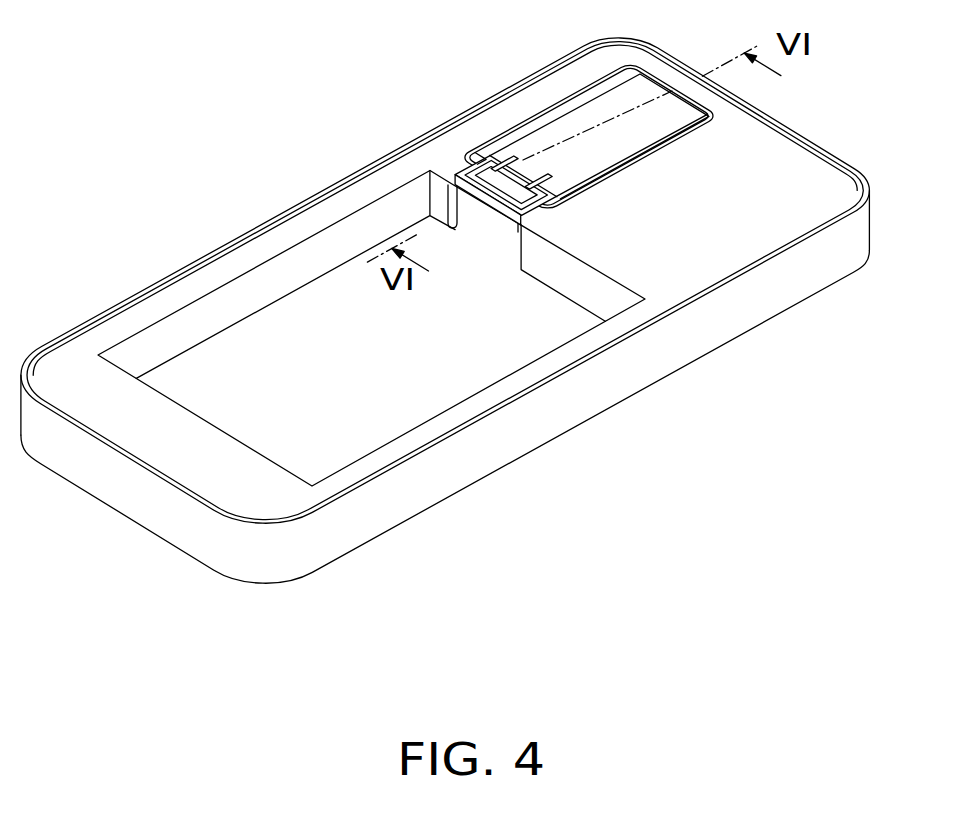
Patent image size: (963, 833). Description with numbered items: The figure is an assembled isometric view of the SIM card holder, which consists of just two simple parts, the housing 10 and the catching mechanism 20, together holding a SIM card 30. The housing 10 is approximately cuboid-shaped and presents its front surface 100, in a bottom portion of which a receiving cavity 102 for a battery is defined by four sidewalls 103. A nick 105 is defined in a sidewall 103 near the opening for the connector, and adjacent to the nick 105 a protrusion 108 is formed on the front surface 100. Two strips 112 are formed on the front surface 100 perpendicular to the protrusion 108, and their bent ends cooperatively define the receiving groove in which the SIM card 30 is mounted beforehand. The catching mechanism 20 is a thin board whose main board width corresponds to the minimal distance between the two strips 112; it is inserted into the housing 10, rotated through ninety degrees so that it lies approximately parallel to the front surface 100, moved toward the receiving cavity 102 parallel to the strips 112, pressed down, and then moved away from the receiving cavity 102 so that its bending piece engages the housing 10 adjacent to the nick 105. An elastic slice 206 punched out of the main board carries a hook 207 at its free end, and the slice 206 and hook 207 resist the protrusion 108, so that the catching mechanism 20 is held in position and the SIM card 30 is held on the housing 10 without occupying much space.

The housing 10 is at (733, 320).
The front surface 100 is at (783, 170).
The receiving cavity 102 is at (237, 352).
The sidewall 103 is at (603, 295).
The nick 105 is at (495, 233).
The protrusion 108 is at (468, 178).
The strip 112 is at (717, 128).
The catching mechanism 20 is at (607, 108).
The SIM card 30 is at (550, 120).
The elastic slice 206 is at (490, 187).
The hook 207 is at (480, 148).